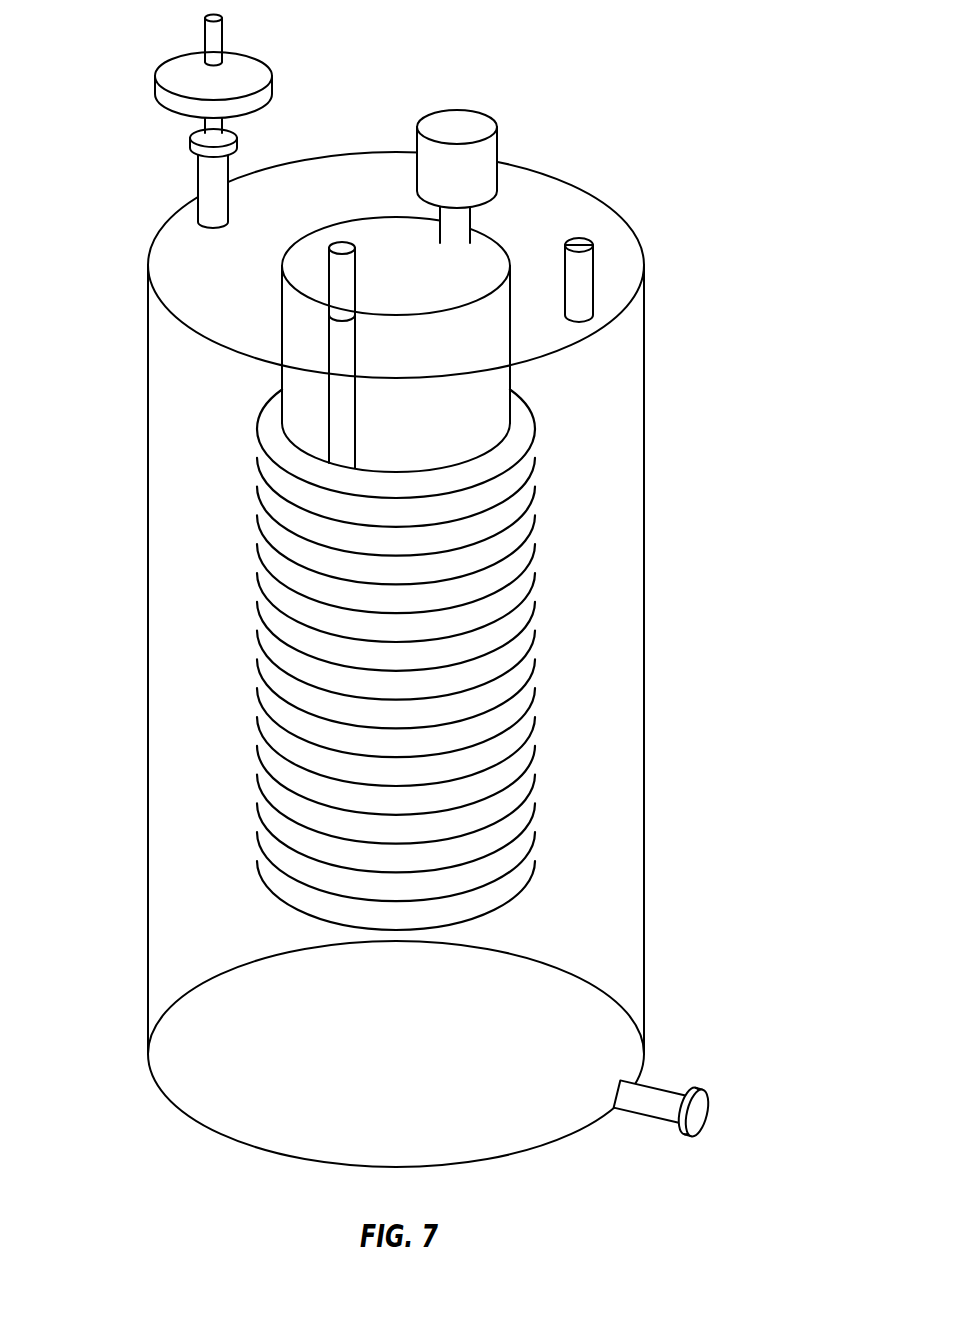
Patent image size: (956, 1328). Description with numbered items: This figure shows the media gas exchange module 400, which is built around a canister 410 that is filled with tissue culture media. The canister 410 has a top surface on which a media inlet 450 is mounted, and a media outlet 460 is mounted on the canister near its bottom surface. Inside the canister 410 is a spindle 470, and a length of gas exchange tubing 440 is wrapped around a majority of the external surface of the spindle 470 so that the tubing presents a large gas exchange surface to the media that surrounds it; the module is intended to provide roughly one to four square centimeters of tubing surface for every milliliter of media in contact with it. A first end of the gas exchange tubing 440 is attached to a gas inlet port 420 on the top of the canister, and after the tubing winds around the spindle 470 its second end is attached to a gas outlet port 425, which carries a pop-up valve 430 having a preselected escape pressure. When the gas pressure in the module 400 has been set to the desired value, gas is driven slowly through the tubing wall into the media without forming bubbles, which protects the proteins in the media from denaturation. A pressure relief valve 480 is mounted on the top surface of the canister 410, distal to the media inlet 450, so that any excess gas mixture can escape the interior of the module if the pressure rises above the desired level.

The media gas exchange module 400 is at (436, 591).
The canister 410 is at (148, 603).
The gas inlet port 420 is at (285, 268).
The gas outlet port 425 is at (455, 225).
The pop-up valve 430 is at (458, 110).
The gas exchange tubing 440 is at (304, 757).
The media inlet 450 is at (582, 238).
The media outlet 460 is at (716, 1116).
The spindle 470 is at (471, 410).
The pressure relief valve 480 is at (166, 62).